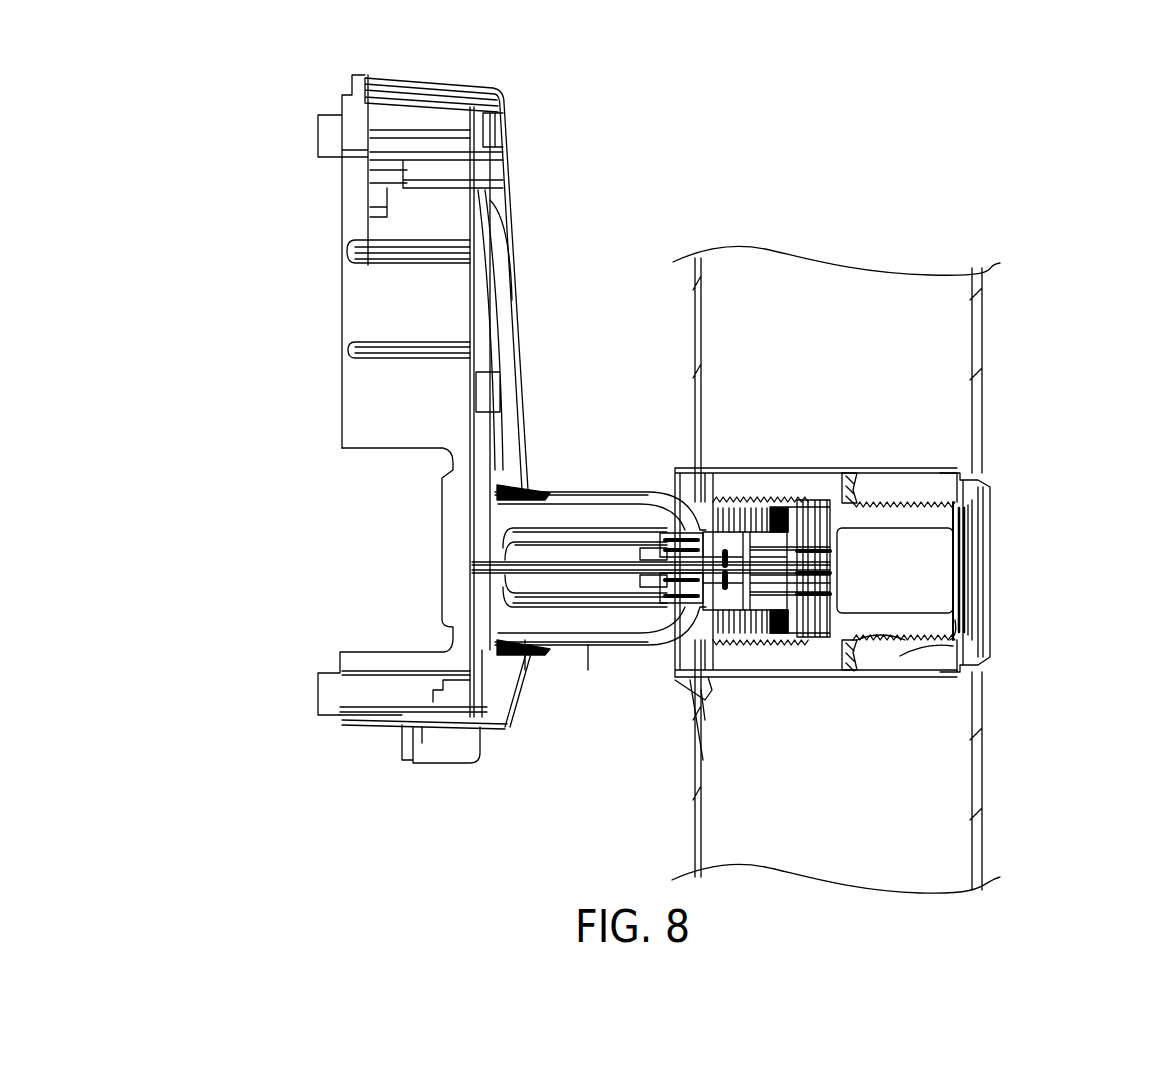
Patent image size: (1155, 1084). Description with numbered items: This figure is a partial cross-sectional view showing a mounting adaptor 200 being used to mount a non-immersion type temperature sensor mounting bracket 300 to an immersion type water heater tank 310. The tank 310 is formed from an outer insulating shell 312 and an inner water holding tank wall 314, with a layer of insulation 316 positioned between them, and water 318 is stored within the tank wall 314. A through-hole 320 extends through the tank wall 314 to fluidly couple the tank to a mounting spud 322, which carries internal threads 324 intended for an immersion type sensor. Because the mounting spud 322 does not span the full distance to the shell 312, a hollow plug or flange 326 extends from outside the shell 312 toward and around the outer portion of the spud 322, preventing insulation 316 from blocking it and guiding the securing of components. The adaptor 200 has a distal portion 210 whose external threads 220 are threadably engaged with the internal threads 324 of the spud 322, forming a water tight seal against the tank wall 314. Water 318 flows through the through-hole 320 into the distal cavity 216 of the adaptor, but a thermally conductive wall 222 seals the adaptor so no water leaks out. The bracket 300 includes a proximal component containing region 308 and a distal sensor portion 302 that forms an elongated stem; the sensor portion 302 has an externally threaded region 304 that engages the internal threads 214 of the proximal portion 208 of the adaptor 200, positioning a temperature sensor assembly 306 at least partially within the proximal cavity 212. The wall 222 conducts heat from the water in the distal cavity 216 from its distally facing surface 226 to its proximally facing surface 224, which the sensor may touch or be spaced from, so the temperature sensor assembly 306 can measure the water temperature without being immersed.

The mounting adaptor 200 is at (855, 466).
The proximal portion 208 is at (781, 480).
The distal portion 210 is at (950, 500).
The proximal cavity 212 is at (822, 648).
The internal threads 214 is at (814, 470).
The distal cavity 216 is at (928, 600).
The external threads 220 is at (962, 623).
The wall 222 is at (840, 560).
The proximally facing surface 224 is at (858, 650).
The distally facing surface 226 is at (840, 599).
The temperature sensor mounting bracket 300 is at (298, 92).
The sensor portion 302 is at (598, 645).
The externally threaded region 304 is at (745, 650).
The temperature sensor assembly 306 is at (680, 456).
The proximal component containing region 308 is at (326, 518).
The water heater tank 310 is at (870, 162).
The outer insulating shell 312 is at (695, 326).
The inner water holding tank wall 314 is at (980, 325).
The layer of insulation 316 is at (843, 272).
The water 318 is at (1141, 566).
The through-hole 320 is at (976, 530).
The mounting spud 322 is at (942, 668).
The internal threads 324 is at (912, 655).
The hollow plug or flange 326 is at (678, 688).